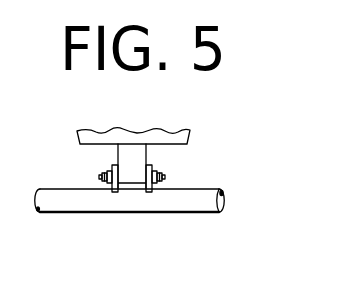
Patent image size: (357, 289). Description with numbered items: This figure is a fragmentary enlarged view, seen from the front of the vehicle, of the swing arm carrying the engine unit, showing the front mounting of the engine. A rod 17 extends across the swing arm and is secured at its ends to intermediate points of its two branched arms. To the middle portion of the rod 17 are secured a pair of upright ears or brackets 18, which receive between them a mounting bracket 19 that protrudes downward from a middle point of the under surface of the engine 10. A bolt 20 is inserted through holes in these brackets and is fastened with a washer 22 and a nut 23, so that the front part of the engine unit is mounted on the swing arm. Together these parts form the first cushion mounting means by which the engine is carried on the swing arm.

The engine 10 is at (190, 132).
The rod 17 is at (74, 201).
The upright ears or brackets 18 is at (114, 194).
The mounting bracket 19 is at (143, 157).
The bolt 20 is at (159, 175).
The washer 22 is at (110, 168).
The nut 23 is at (100, 179).